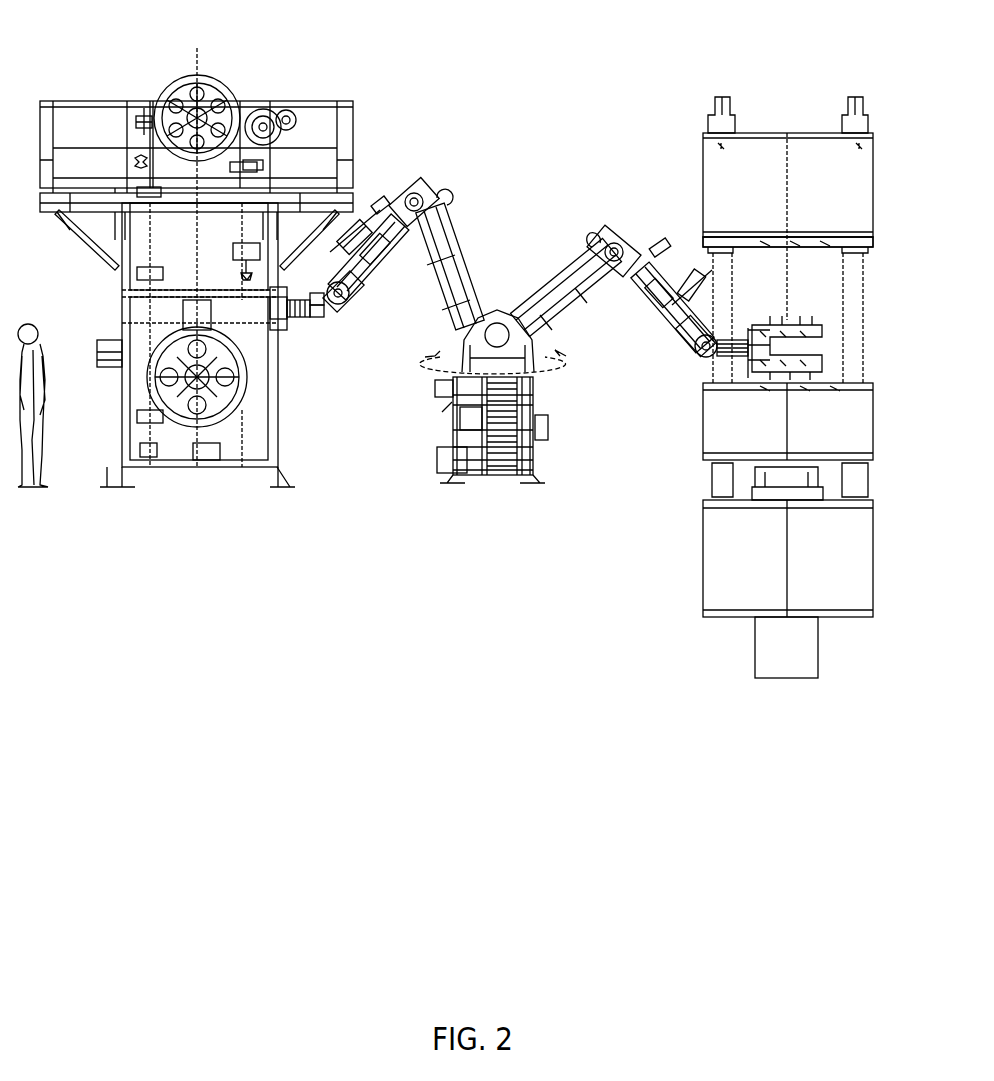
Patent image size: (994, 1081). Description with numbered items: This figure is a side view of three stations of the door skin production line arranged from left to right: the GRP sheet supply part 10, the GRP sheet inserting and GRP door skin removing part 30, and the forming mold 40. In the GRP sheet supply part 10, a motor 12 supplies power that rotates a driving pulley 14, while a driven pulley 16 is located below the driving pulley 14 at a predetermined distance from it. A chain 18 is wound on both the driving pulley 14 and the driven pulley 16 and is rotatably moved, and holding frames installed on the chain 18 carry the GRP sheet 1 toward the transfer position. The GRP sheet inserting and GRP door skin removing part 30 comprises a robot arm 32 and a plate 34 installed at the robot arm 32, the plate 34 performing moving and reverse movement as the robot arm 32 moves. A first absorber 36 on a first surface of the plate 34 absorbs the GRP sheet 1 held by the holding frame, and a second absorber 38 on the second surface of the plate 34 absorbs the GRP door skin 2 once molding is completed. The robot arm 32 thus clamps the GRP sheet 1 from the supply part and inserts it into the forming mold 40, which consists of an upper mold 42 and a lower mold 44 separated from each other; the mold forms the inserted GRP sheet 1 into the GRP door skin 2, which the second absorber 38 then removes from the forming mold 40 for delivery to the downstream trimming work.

The GRP sheet 1 is at (290, 266).
The GRP door skin 2 is at (817, 253).
The GRP sheet supply part 10 is at (357, 92).
The motor 12 is at (250, 98).
The driving pulley 14 is at (170, 78).
The driven pulley 16 is at (150, 139).
The chain 18 is at (133, 178).
The GRP sheet inserting and GRP door skin removing part 30 is at (518, 207).
The robot arm 32 is at (135, 337).
The plate 34 is at (303, 318).
The first absorber 36 is at (230, 285).
The second absorber 38 is at (292, 340).
The forming mold 40 is at (888, 120).
The upper mold 42 is at (842, 210).
The lower mold 44 is at (850, 405).